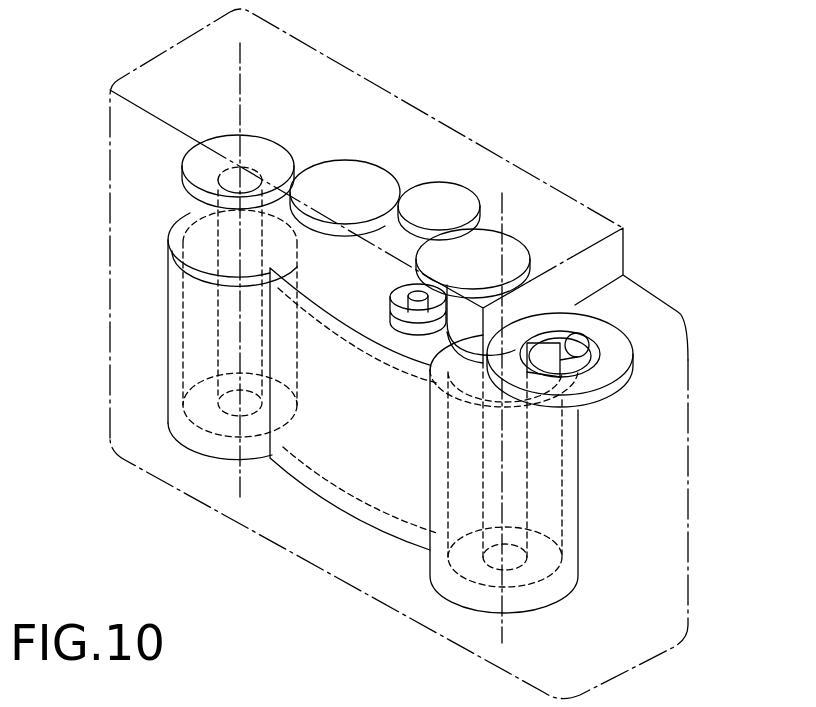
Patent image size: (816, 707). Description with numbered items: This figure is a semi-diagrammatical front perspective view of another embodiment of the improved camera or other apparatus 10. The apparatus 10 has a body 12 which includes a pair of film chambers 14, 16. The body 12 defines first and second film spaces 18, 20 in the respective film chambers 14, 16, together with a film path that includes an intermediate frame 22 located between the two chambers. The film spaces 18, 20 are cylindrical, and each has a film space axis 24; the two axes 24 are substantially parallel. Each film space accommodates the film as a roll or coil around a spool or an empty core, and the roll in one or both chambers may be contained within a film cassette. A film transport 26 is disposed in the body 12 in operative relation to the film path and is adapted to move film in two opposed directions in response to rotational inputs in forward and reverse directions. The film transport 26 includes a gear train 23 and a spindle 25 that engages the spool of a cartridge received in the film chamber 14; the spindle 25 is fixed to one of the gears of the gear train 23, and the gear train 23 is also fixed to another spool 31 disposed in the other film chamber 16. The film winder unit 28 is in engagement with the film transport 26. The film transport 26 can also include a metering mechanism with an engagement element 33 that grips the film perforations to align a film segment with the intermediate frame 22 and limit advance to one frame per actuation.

The camera or other apparatus 10 is at (602, 102).
The body 12 is at (373, 80).
The film chamber 14 is at (567, 582).
The film chamber 16 is at (167, 318).
The first film space 18 is at (460, 573).
The second film space 20 is at (173, 452).
The intermediate frame 22 is at (310, 493).
The gear train 23 is at (455, 187).
The film space axis 24 is at (240, 57).
The spindle 25 is at (430, 405).
The film transport 26 is at (426, 196).
The film winder unit 28 is at (612, 395).
The spool 31 is at (180, 213).
The engagement element 33 is at (388, 363).